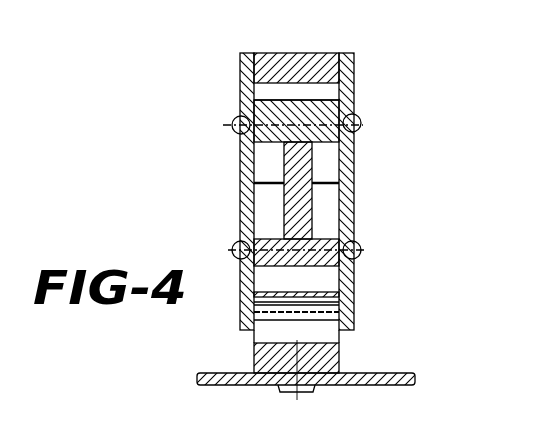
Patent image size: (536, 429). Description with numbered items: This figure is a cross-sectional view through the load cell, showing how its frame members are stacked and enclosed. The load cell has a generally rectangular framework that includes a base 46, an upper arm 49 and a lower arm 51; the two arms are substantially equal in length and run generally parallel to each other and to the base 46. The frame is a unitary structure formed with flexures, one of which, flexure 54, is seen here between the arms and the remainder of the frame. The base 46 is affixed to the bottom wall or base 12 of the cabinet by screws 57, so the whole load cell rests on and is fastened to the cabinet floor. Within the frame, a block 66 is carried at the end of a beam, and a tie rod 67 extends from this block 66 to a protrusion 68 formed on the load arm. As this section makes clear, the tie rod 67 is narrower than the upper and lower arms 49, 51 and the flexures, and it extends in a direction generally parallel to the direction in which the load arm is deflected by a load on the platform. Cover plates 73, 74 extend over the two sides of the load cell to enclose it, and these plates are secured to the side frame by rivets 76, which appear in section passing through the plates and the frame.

The base 12 is at (423, 348).
The base 46 is at (268, 345).
The upper arm 49 is at (318, 52).
The lower arm 51 is at (340, 312).
The flexure 54 is at (265, 293).
The screws 57 is at (285, 393).
The block 66 is at (333, 100).
The tie rod 67 is at (284, 199).
The protrusion 68 is at (338, 240).
The cover plate 73 is at (240, 72).
The cover plate 74 is at (350, 167).
The rivets 76 is at (236, 129).